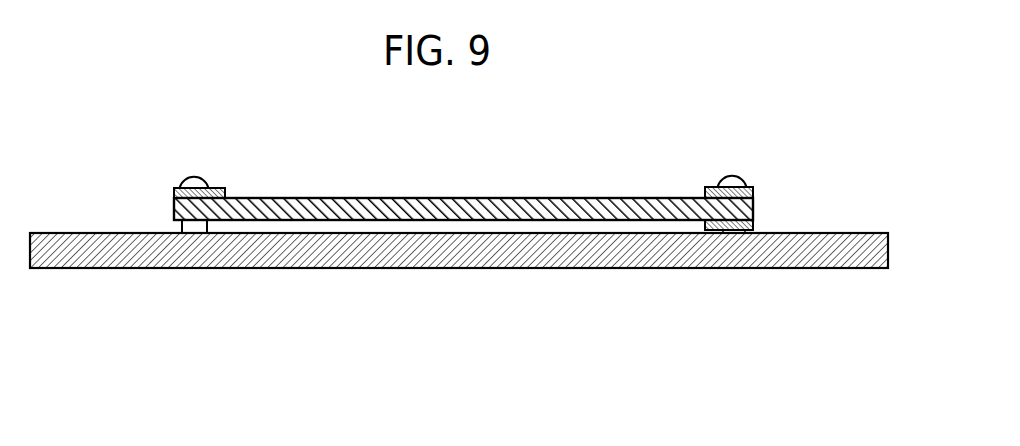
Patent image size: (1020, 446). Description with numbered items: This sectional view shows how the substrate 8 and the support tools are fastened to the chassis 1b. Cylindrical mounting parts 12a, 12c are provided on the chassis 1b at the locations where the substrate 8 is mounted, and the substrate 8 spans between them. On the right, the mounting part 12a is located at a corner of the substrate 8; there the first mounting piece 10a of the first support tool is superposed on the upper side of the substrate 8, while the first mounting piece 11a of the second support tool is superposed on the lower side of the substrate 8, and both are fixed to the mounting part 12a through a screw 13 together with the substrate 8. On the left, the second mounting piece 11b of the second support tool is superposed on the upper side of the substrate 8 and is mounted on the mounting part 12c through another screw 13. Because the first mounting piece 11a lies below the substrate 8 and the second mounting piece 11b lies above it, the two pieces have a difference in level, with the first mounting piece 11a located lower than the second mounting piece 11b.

The chassis 1b is at (538, 257).
The substrate 8 is at (395, 198).
The first mounting piece 10a is at (753, 188).
The first mounting piece 11a is at (753, 222).
The second mounting piece 11b is at (177, 190).
The mounting part 12a is at (732, 232).
The mounting part 12c is at (193, 225).
The screw 13 is at (193, 172).